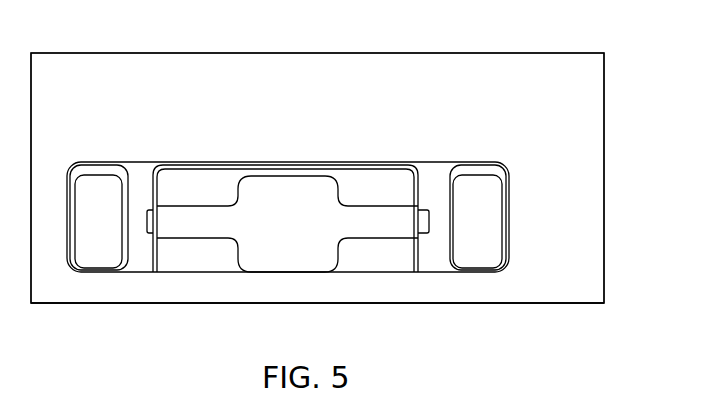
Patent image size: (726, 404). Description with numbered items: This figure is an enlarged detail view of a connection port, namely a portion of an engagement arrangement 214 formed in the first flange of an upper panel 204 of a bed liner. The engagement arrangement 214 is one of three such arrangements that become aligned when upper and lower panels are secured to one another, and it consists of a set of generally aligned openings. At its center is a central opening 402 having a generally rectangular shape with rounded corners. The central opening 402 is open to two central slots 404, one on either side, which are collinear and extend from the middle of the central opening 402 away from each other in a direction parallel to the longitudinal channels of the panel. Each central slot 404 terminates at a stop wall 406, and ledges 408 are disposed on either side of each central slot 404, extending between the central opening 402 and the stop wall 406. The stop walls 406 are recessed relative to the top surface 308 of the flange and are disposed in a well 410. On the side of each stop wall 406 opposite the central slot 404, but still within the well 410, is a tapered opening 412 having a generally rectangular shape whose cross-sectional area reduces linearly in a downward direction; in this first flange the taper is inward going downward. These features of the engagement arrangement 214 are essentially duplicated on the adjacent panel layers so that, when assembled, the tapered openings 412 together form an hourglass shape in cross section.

The upper panel 204 is at (533, 63).
The engagement arrangement 214 is at (191, 319).
The top surface 308 is at (580, 148).
The central opening 402 is at (300, 208).
The central slot 404 is at (188, 222).
The stop wall 406 is at (140, 250).
The ledge 408 is at (218, 197).
The well 410 is at (514, 208).
The tapered opening 412 is at (92, 238).